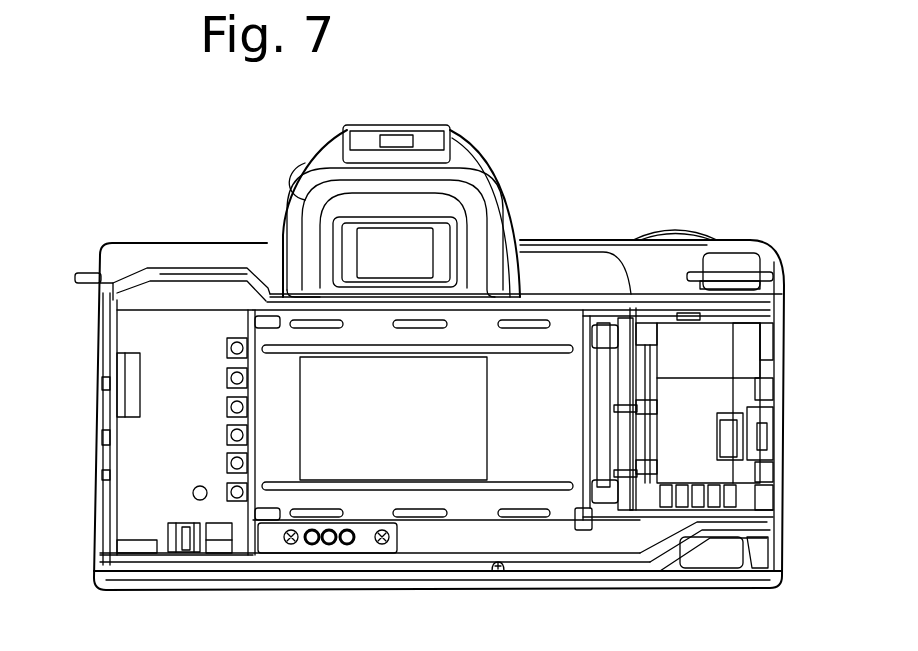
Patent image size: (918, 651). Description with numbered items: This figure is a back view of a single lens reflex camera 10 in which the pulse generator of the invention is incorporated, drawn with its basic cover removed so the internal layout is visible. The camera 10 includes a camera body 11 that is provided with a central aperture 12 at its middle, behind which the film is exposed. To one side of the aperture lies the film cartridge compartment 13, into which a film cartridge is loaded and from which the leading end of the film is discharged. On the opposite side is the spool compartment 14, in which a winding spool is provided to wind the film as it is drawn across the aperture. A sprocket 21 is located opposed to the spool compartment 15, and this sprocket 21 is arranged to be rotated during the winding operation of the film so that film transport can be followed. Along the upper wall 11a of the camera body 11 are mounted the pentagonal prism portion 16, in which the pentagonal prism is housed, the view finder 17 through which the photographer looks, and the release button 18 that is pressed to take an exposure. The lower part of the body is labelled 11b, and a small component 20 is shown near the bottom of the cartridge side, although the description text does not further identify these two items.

The camera 10 is at (646, 163).
The camera body 11 is at (757, 239).
The upper wall 11a is at (590, 235).
The lower surface of camera body 11b is at (590, 579).
The central aperture 12 is at (458, 397).
The film cartridge compartment 13 is at (182, 450).
The spool compartment 14 is at (702, 405).
The spool compartment 15 is at (747, 360).
The pentagonal prism portion 16 is at (497, 182).
The view finder 17 is at (410, 250).
The release button 18 is at (672, 231).
The electrical contact 20 is at (173, 524).
The sprocket 21 is at (603, 421).